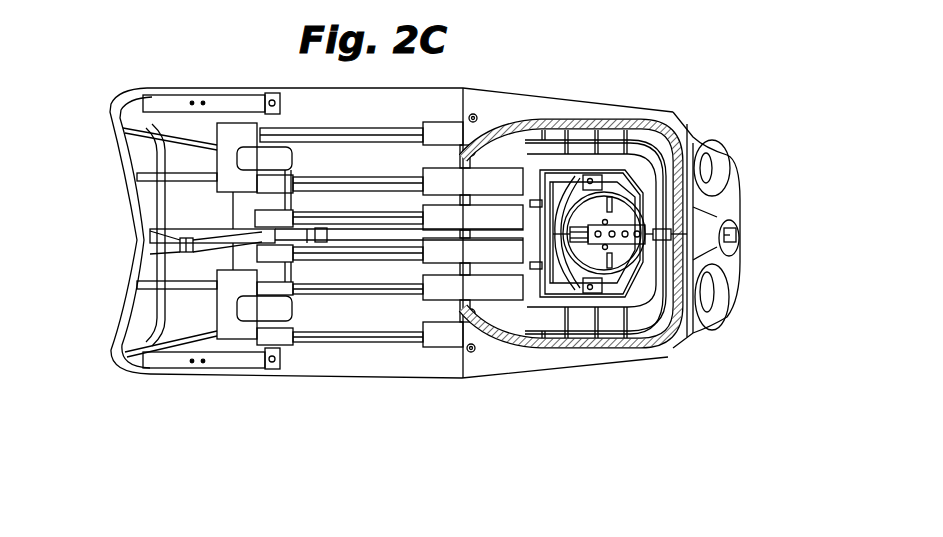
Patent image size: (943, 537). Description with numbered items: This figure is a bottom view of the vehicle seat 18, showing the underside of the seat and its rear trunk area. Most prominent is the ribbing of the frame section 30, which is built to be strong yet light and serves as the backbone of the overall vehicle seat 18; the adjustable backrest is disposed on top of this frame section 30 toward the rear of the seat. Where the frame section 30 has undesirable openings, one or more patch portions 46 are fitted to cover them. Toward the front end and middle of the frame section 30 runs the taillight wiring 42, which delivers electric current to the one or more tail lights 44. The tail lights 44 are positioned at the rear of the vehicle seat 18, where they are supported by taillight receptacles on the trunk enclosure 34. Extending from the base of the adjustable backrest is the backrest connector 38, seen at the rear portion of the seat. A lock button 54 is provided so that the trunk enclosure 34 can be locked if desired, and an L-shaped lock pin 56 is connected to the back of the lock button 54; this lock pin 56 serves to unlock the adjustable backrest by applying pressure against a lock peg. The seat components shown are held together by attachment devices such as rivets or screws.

The vehicle seat 18 is at (130, 395).
The frame section 30 is at (397, 317).
The trunk enclosure 34 is at (487, 362).
The backrest connector 38 is at (598, 297).
The taillight wiring 42 is at (178, 250).
The tail lights 44 is at (707, 172).
The patch portions 46 is at (230, 135).
The lock button 54 is at (733, 235).
The lock pin 56 is at (677, 221).